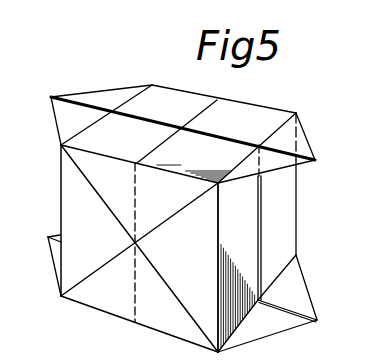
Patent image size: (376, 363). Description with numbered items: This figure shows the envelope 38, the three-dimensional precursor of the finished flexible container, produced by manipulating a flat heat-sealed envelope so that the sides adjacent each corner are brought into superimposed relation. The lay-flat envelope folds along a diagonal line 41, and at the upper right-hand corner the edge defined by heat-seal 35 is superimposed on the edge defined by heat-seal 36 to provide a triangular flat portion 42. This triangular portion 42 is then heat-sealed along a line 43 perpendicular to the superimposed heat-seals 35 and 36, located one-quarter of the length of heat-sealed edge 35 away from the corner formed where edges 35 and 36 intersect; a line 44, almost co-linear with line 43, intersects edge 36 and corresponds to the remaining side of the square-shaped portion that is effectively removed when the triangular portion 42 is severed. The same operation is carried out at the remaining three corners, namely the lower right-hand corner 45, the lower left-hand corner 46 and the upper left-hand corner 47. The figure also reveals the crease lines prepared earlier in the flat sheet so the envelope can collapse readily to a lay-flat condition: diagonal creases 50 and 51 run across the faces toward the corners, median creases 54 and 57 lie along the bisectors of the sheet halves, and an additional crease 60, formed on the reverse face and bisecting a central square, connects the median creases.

The heat-seal 35 is at (304, 134).
The heat-seal 36 is at (262, 192).
The envelope 38 is at (100, 311).
The diagonal line 41 is at (179, 213).
The triangular flat portion 42 is at (304, 148).
The heat-seal line 43 is at (278, 124).
The line 44 is at (238, 168).
The lower right-hand corner 45 is at (302, 298).
The lower left-hand corner 46 is at (52, 255).
The upper left-hand corner 47 is at (63, 121).
The diagonal crease line 50 is at (222, 184).
The diagonal crease line 51 is at (182, 339).
The median crease line 54 is at (157, 147).
The median crease line 57 is at (195, 110).
The additional line crease 60 is at (137, 193).